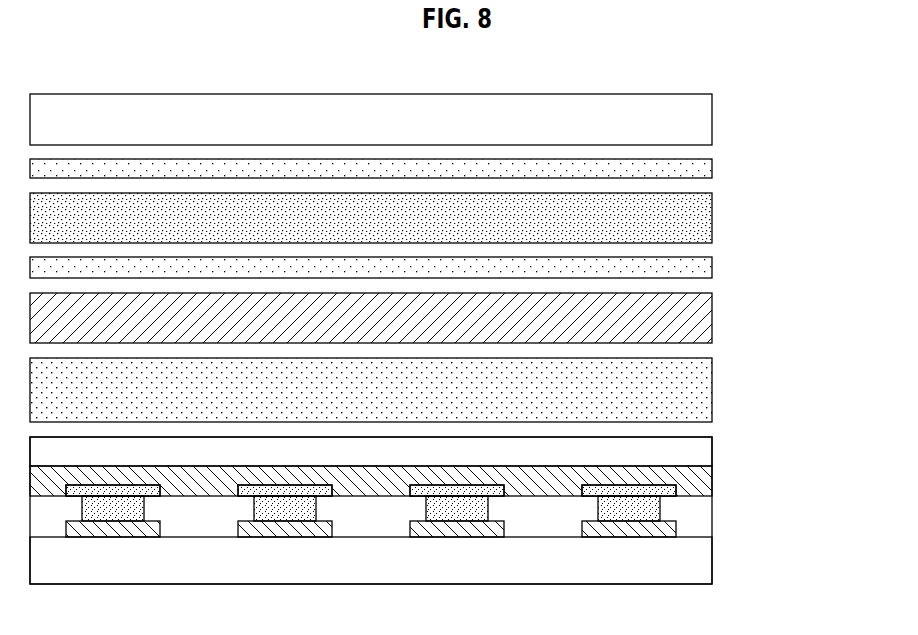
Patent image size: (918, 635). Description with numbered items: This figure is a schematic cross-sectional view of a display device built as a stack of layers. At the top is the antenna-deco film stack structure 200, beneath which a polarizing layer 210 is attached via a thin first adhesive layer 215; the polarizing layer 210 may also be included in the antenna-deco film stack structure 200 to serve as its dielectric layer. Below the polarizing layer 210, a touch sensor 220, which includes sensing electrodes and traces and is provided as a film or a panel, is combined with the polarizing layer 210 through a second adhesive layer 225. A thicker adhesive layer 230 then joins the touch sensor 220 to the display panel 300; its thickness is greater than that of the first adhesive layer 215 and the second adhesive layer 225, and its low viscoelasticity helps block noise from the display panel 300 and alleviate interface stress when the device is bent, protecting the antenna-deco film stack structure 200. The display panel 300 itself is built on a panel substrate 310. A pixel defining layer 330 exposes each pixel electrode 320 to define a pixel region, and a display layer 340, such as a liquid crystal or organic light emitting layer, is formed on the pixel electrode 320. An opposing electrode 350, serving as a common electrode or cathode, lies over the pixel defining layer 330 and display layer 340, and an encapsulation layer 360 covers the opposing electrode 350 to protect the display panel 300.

The antenna-deco film stack structure 200 is at (712, 118).
The first adhesive layer 215 is at (712, 166).
The polarizing layer 210 is at (712, 216).
The second adhesive layer 225 is at (712, 266).
The touch sensor 220 is at (712, 310).
The adhesive layer 230 is at (712, 385).
The display panel 300 is at (455, 500).
The panel substrate 310 is at (415, 560).
The pixel electrode 320 is at (676, 526).
The pixel defining layer 330 is at (704, 503).
The display layer 340 is at (712, 490).
The opposing electrode 350 is at (712, 478).
The encapsulation layer 360 is at (712, 452).